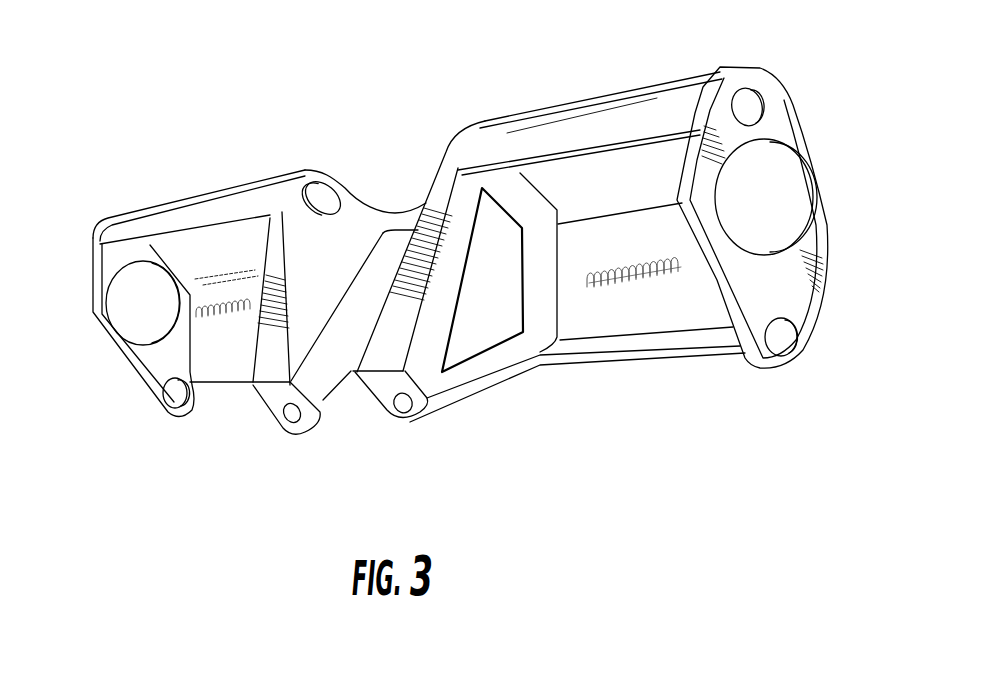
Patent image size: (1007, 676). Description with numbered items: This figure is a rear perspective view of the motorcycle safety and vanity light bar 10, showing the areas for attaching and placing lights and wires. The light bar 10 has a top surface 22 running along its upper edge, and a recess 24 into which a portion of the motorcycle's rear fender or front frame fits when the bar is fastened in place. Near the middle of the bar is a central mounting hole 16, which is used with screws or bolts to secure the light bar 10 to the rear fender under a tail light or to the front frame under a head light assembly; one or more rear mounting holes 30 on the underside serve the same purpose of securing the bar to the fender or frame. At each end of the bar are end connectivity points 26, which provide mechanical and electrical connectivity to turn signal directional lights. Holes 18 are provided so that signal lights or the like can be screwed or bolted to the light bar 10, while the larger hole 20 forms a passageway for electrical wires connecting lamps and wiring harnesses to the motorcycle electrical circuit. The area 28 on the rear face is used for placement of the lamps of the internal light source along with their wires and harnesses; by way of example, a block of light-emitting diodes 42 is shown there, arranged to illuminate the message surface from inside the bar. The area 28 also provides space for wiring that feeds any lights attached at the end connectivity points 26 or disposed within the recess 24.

The motorcycle safety and vanity light bar 10 is at (465, 249).
The central mounting hole 16 is at (323, 198).
The holes 18 is at (177, 406).
The hole 20 is at (120, 303).
The top surface 22 is at (217, 183).
The recess 24 is at (413, 166).
The end connectivity points 26 is at (143, 363).
The area 28 is at (225, 327).
The rear mounting hole 30 is at (290, 428).
The block of light-emitting diodes (LEDs) 42 is at (217, 316).